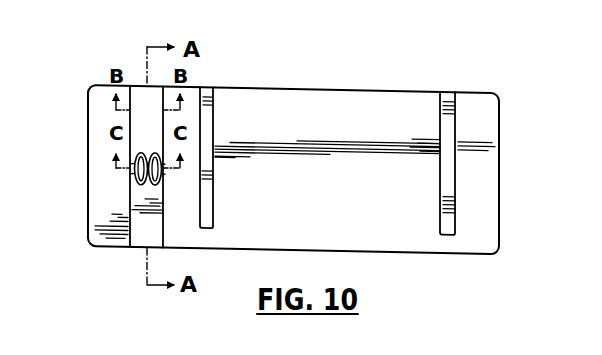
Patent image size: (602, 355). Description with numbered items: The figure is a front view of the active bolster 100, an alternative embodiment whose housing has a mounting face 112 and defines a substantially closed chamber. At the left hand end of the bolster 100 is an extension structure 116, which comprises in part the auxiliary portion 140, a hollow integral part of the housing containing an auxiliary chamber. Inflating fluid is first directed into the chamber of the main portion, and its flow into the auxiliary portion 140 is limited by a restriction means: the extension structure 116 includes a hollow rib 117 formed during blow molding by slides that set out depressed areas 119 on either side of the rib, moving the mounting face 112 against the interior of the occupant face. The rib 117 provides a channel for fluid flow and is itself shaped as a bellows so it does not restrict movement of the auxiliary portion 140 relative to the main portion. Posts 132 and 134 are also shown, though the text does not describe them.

The bolster 100 is at (375, 79).
The mounting face 112 is at (352, 183).
The extension structure 116 is at (126, 249).
The hollow rib 117 is at (128, 175).
The depressed areas 119 is at (158, 123).
The first post 132 is at (213, 208).
The second post 134 is at (447, 145).
The auxiliary portion 140 is at (88, 115).